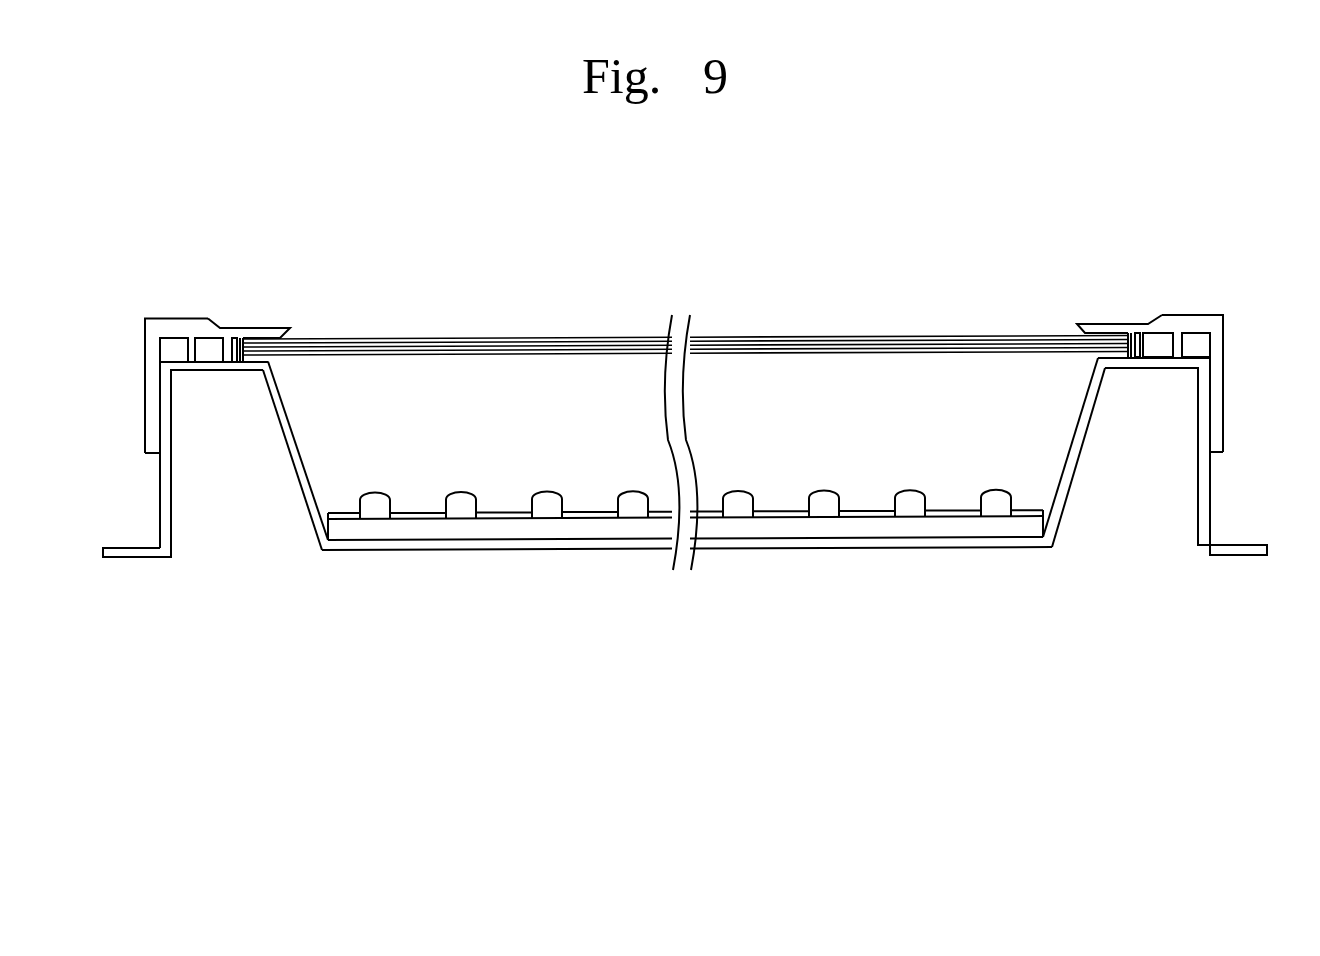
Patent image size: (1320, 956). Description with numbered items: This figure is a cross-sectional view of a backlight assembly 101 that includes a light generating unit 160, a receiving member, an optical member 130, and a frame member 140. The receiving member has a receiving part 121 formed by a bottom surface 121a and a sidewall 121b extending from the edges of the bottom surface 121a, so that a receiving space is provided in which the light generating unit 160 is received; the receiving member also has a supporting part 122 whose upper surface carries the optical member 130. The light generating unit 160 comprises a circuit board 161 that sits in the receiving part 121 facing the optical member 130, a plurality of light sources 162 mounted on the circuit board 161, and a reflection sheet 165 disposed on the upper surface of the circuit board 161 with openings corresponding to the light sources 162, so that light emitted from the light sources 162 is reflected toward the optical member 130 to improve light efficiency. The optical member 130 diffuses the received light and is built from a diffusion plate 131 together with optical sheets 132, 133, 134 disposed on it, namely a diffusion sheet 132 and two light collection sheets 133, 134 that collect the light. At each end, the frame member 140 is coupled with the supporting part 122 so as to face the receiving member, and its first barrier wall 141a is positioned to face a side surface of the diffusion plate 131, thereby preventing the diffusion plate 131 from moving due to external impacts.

The backlight assembly 101 is at (1213, 266).
The receiving part 121 is at (405, 635).
The bottom surface 121a is at (380, 545).
The sidewall 121b is at (303, 510).
The supporting part 122 is at (257, 363).
The optical member 130 is at (387, 273).
The diffusion plate 131 is at (390, 354).
The diffusion sheet 132 is at (450, 350).
The light collection sheet 133 is at (515, 345).
The light collection sheet 134 is at (581, 338).
The frame member 140 is at (150, 377).
The first barrier wall 141a is at (226, 356).
The light generating unit 160 is at (622, 635).
The circuit board 161 is at (505, 527).
The light sources 162 is at (545, 508).
The reflection sheet 165 is at (595, 517).